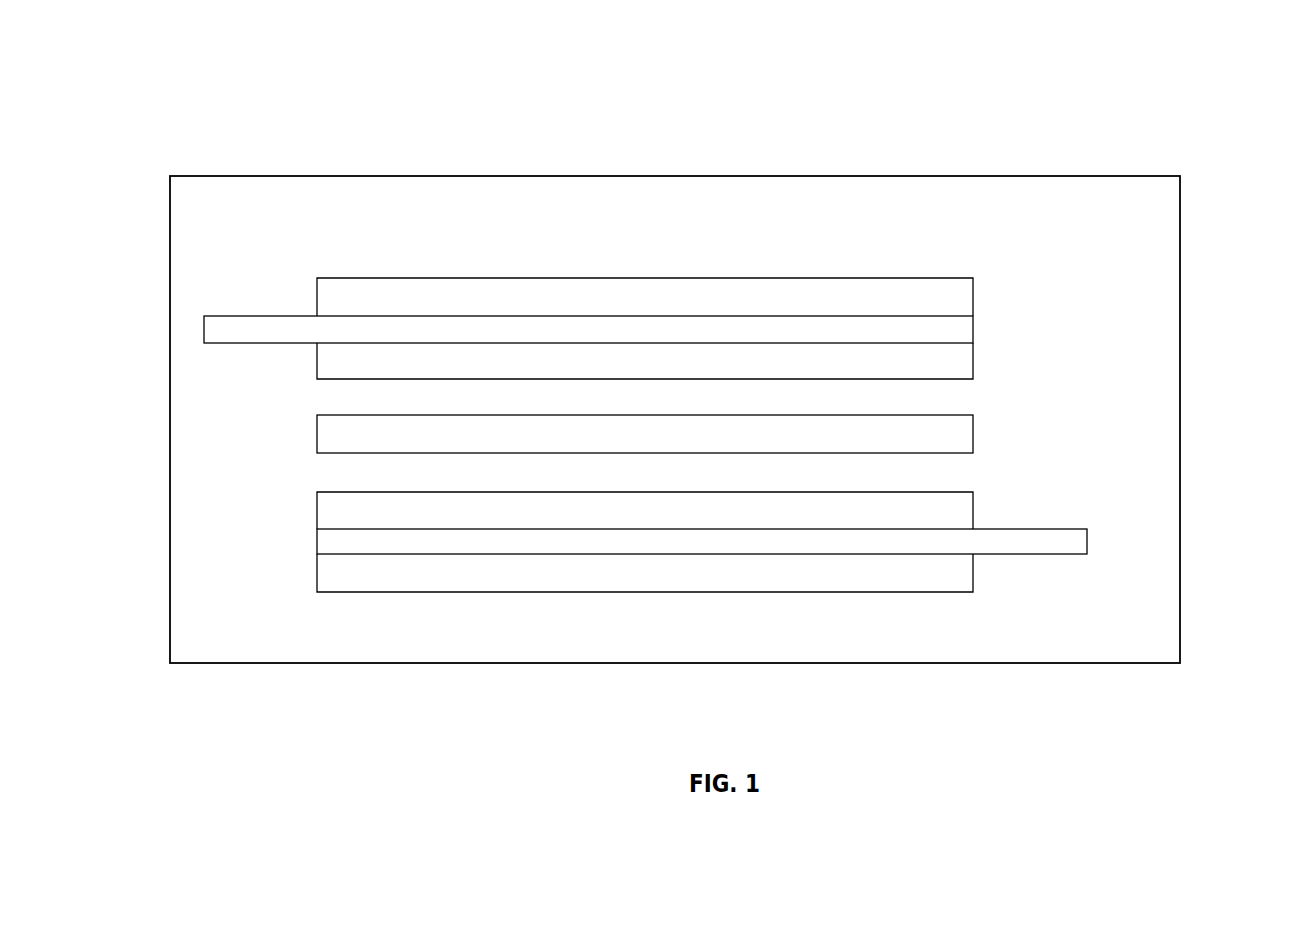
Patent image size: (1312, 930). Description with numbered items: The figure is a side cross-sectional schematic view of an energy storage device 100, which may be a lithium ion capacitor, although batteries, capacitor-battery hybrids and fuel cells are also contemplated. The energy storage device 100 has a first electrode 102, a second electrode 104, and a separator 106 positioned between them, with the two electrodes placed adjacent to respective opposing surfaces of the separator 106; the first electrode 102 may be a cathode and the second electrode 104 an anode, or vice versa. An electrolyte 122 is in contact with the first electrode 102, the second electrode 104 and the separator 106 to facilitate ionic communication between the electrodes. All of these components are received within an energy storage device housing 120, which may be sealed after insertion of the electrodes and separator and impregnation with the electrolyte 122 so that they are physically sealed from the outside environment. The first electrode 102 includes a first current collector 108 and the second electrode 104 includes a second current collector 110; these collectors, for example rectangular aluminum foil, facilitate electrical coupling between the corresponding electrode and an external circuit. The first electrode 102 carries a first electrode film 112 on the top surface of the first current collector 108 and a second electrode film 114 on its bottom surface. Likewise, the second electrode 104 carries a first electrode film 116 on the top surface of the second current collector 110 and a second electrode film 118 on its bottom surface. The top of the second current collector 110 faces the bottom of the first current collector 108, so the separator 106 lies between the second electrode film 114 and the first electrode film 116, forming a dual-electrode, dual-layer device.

The energy storage device 100 is at (236, 96).
The first electrode 102 is at (675, 328).
The second electrode 104 is at (634, 543).
The separator 106 is at (973, 430).
The first current collector 108 is at (973, 328).
The second current collector 110 is at (317, 545).
The first electrode film 112 is at (973, 293).
The second electrode film 114 is at (973, 361).
The first electrode film 116 is at (317, 506).
The second electrode film 118 is at (610, 575).
The energy storage device housing 120 is at (940, 176).
The electrolyte 122 is at (1147, 238).